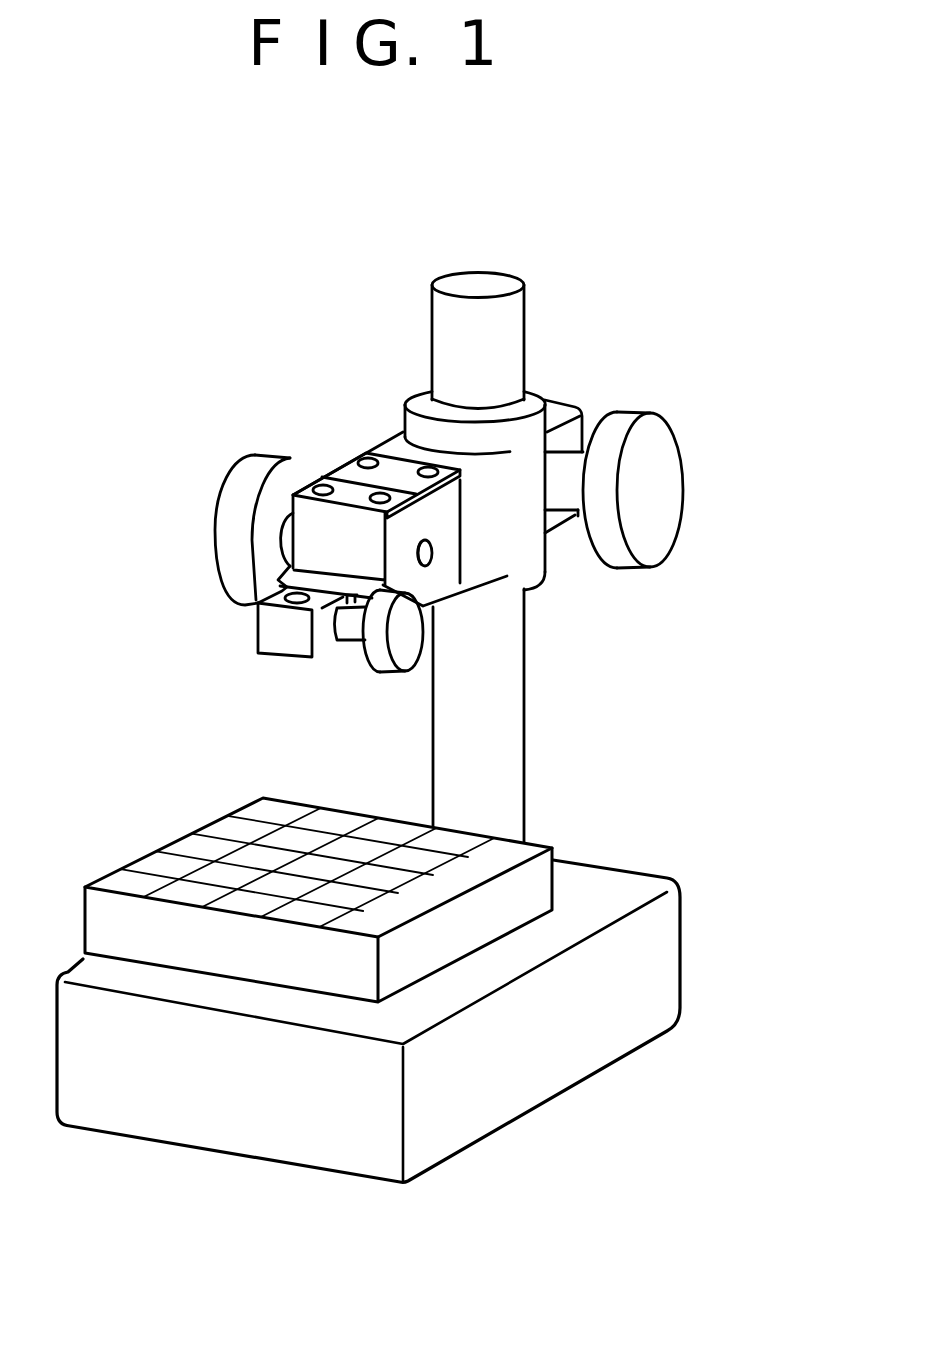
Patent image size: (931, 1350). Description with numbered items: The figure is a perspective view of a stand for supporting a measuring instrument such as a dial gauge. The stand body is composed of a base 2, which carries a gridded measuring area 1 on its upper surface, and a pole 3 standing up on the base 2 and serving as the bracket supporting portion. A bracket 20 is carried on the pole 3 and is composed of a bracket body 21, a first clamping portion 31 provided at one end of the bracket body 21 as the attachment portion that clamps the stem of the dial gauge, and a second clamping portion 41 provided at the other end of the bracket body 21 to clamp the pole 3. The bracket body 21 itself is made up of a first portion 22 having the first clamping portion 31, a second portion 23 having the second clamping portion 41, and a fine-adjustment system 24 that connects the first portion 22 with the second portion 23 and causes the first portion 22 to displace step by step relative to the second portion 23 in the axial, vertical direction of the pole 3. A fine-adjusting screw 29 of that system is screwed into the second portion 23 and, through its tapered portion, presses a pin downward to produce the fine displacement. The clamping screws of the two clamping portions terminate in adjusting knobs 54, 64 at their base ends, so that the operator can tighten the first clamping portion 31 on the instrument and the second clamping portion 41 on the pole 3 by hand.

The measuring area 1 is at (102, 880).
The base 2 is at (548, 1097).
The pole 3 is at (525, 742).
The bracket 20 is at (543, 577).
The bracket body 21 is at (387, 443).
The first portion 22 is at (300, 662).
The second portion 23 is at (545, 567).
The fine-adjustment system 24 is at (340, 468).
The fine-adjusting screw 29 is at (227, 493).
The first clamping portion 31 is at (255, 643).
The second clamping portion 41 is at (560, 407).
The adjusting knob 54 is at (383, 673).
The adjusting knob 64 is at (677, 505).